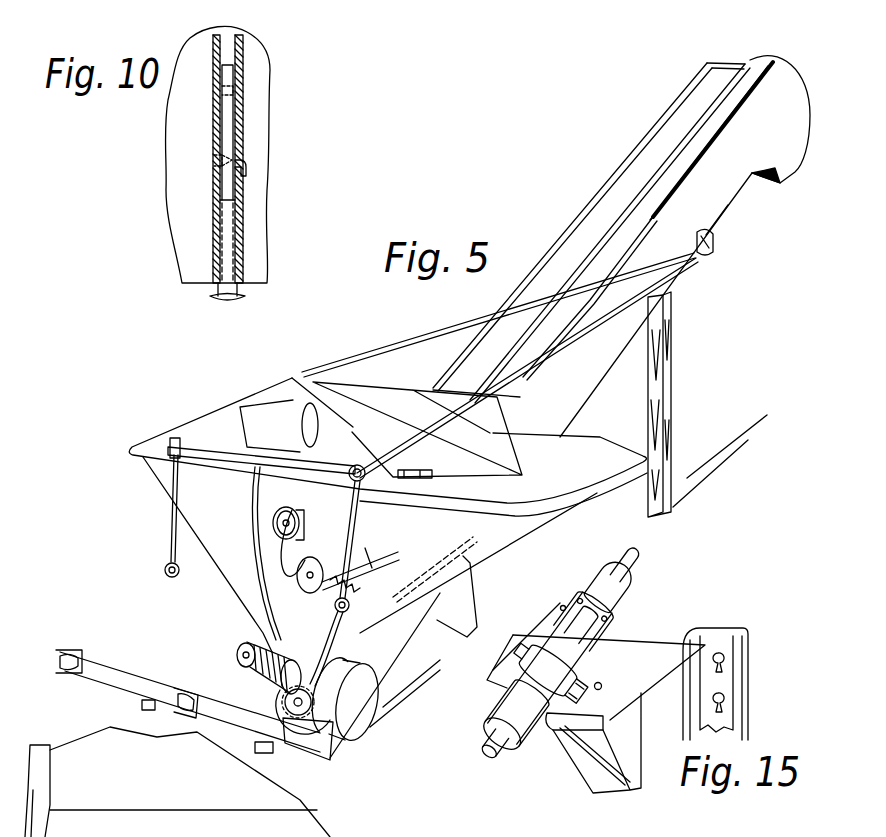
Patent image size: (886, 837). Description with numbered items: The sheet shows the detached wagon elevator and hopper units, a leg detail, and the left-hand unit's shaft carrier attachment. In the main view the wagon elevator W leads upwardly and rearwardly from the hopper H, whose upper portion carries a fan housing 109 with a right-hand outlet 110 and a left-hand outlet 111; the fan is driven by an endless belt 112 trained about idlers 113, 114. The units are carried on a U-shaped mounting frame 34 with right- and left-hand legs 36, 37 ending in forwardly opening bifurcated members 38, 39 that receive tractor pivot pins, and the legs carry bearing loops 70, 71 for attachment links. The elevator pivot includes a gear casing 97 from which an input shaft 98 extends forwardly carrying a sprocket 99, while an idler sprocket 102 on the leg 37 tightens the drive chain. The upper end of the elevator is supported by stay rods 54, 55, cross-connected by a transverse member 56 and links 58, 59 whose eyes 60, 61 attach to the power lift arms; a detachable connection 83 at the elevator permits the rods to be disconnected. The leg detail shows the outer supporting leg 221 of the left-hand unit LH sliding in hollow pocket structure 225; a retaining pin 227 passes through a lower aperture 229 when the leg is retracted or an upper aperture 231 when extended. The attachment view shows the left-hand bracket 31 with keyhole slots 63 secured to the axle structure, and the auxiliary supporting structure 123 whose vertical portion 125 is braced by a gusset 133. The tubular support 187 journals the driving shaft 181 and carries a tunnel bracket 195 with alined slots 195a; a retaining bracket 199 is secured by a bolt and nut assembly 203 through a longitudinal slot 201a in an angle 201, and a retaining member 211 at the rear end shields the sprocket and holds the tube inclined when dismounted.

In FIG. 10, the outer supporting leg 221 is at (216, 294).
In FIG. 10, the pocket structure 225 is at (244, 133).
In FIG. 10, the retaining pin 227 is at (246, 170).
In FIG. 10, the lower aperture 229 is at (220, 161).
In FIG. 10, the upper aperture 231 is at (224, 92).
In FIG. 10, the left-hand unit LH is at (264, 103).
In FIG. 5, the wagon elevator W is at (731, 203).
In FIG. 5, the hopper H is at (588, 458).
In FIG. 5, the detachable connection 83 is at (714, 244).
In FIG. 5, the stay rod 54 is at (436, 333).
In FIG. 5, the stay rod 55 is at (594, 317).
In FIG. 5, the transverse member 56 is at (225, 458).
In FIG. 5, the right-hand link 58 is at (170, 506).
In FIG. 5, the left-hand link 59 is at (351, 517).
In FIG. 5, the eye 60 is at (164, 568).
In FIG. 5, the eye 61 is at (350, 603).
In FIG. 5, the gear casing 97 is at (377, 687).
In FIG. 5, the input shaft 98 is at (246, 646).
In FIG. 5, the sprocket 99 is at (293, 650).
In FIG. 5, the idler sprocket 102 is at (283, 724).
In FIG. 5, the fan housing 109 is at (293, 382).
In FIG. 5, the right-hand outlet 110 is at (244, 423).
In FIG. 5, the left-hand outlet 111 is at (410, 475).
In FIG. 5, the endless belt 112 is at (253, 525).
In FIG. 5, the idler 113 is at (287, 511).
In FIG. 5, the idler 114 is at (300, 572).
In FIG. 5, the mounting frame 34 is at (138, 661).
In FIG. 5, the right-hand leg 36 is at (92, 660).
In FIG. 5, the left-hand leg 37 is at (207, 700).
In FIG. 5, the bifurcated member 38 is at (63, 648).
In FIG. 5, the bifurcated member 39 is at (178, 686).
In FIG. 5, the bearing loop 70 is at (140, 705).
In FIG. 5, the bearing loop 71 is at (274, 752).
In FIG. 15, the auxiliary supporting structure 123 is at (570, 778).
In FIG. 15, the vertical portion 125 is at (550, 668).
In FIG. 15, the gusset 133 is at (610, 790).
In FIG. 15, the shaft 181 is at (494, 744).
In FIG. 15, the tubular support 187 is at (615, 577).
In FIG. 15, the bracket 195 is at (585, 619).
In FIG. 15, the alined slots 195a is at (598, 606).
In FIG. 15, the retaining bracket 199 is at (521, 651).
In FIG. 15, the angle 201 is at (602, 685).
In FIG. 15, the longitudinal slot 201a is at (603, 684).
In FIG. 15, the bolt and nut assembly 203 is at (553, 674).
In FIG. 15, the retaining member 211 is at (515, 716).
In FIG. 15, the left-hand bracket 31 is at (735, 628).
In FIG. 15, the keyhole slots 63 is at (722, 708).